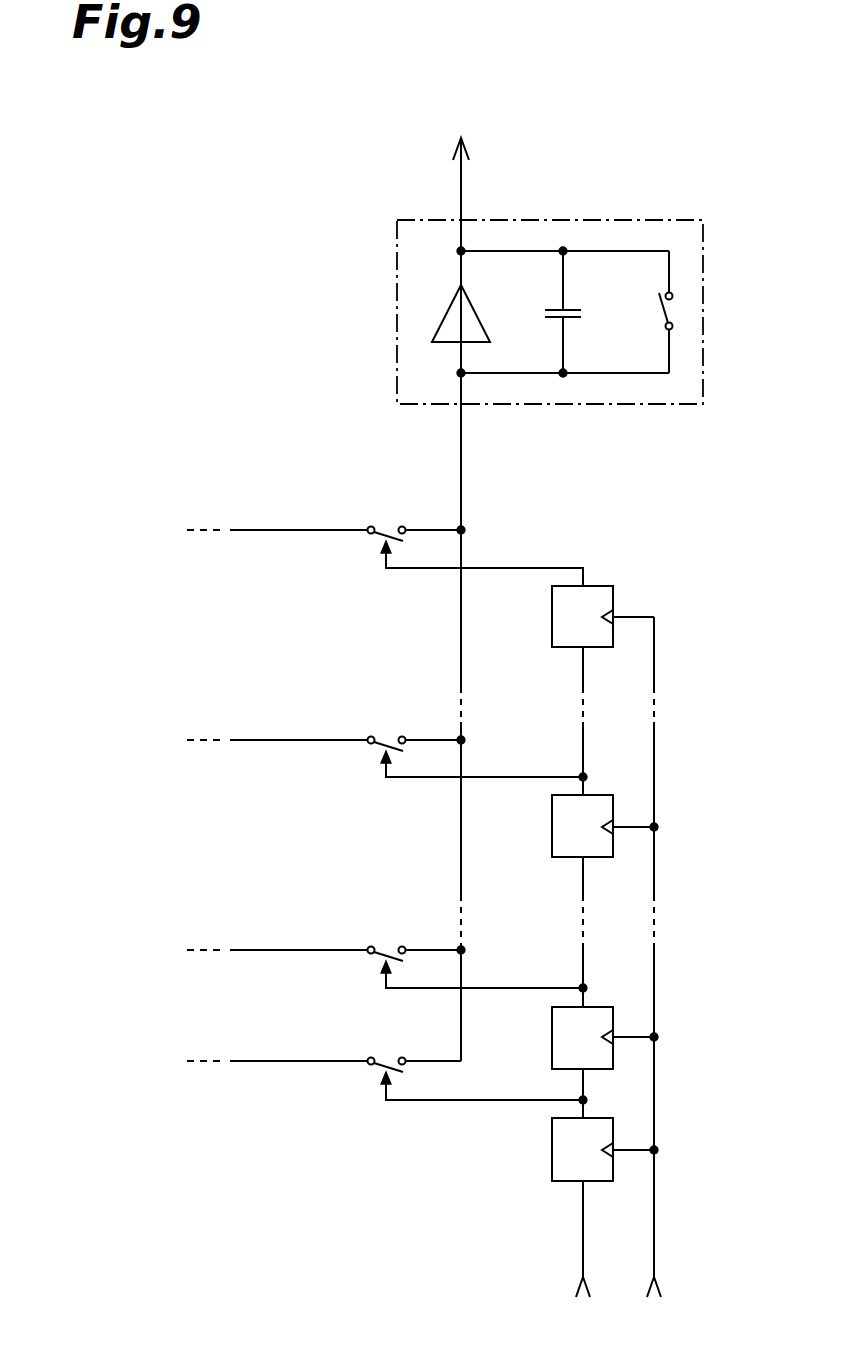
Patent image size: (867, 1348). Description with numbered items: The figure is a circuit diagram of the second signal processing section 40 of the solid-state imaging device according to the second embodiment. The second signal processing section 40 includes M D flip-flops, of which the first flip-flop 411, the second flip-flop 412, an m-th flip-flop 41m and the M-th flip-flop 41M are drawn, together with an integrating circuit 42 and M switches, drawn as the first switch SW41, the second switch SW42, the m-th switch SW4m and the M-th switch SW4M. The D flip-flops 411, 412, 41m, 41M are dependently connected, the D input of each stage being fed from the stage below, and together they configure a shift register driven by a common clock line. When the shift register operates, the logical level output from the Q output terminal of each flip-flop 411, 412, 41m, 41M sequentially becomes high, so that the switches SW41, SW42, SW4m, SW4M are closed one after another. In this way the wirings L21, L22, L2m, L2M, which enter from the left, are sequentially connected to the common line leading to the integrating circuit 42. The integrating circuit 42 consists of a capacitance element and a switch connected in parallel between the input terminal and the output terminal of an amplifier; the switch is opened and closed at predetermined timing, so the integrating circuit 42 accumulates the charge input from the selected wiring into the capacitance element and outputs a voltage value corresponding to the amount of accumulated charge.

The second signal processing section 40 is at (310, 225).
The integrating circuit 42 is at (626, 404).
The D flip-flop 41M is at (552, 612).
The D flip-flop 41m is at (552, 822).
The D flip-flop 412 is at (552, 1033).
The D flip-flop 411 is at (552, 1146).
The switch SW4M is at (463, 538).
The switch SW4m is at (465, 741).
The switch SW42 is at (467, 951).
The switch SW41 is at (467, 1063).
The wiring L2M is at (262, 530).
The wiring L2m is at (262, 740).
The wiring L22 is at (262, 950).
The wiring L21 is at (262, 1061).